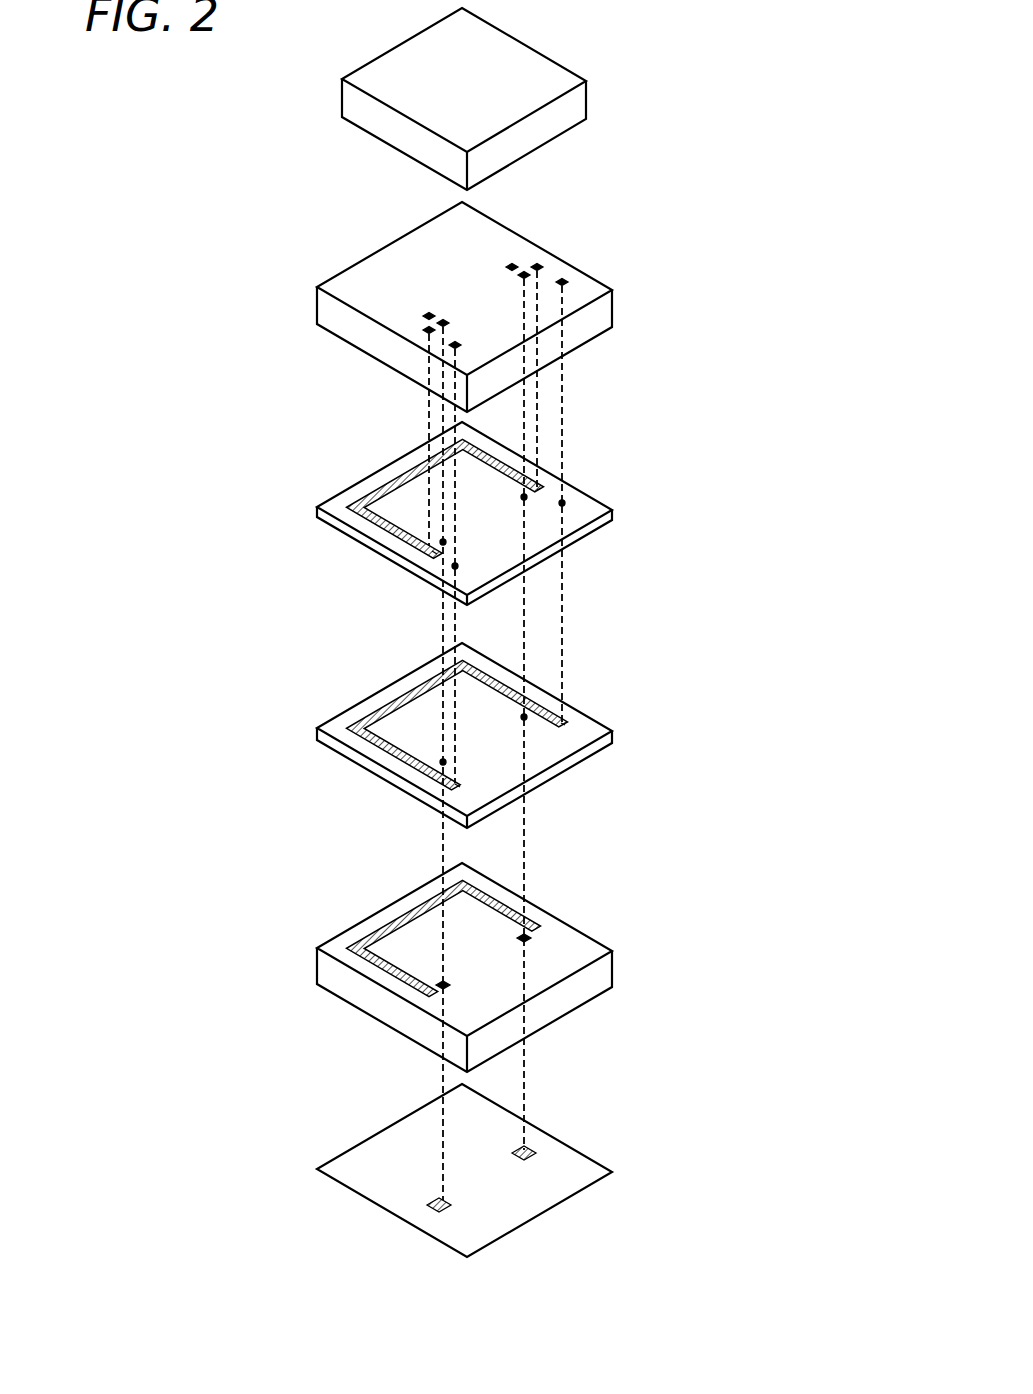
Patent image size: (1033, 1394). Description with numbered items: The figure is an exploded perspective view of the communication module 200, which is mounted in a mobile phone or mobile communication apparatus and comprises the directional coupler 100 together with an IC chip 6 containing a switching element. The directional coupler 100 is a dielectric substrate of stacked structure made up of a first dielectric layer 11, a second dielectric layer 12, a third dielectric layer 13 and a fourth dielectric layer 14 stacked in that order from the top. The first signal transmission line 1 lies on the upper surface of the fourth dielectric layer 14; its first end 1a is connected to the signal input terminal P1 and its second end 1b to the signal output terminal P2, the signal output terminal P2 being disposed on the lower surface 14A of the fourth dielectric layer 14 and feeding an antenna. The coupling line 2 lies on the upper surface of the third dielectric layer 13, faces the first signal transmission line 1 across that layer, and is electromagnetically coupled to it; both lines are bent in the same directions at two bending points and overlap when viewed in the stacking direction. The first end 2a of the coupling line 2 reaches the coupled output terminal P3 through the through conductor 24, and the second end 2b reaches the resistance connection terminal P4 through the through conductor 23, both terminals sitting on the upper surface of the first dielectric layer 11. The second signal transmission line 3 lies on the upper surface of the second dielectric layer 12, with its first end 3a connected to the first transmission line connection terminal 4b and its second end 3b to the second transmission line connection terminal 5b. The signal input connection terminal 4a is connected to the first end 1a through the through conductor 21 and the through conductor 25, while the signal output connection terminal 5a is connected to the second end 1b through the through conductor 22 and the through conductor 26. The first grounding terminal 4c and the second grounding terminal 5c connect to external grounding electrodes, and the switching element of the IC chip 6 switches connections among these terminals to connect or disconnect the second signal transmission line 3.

The communication module 200 is at (742, 119).
The directional coupler 100 is at (692, 379).
The IC chip 6 is at (535, 70).
The first dielectric layer 11 is at (608, 312).
The second dielectric layer 12 is at (607, 520).
The third dielectric layer 13 is at (607, 738).
The fourth dielectric layer 14 is at (607, 973).
The lower surface of the fourth dielectric layer 14A is at (590, 1170).
The first signal transmission line 1 is at (388, 922).
The first end of the first signal transmission line 1a is at (523, 938).
The second end of the first signal transmission line 1b is at (443, 986).
The coupling line 2 is at (392, 698).
The first end of the coupling line 2a is at (563, 725).
The second end of the coupling line 2b is at (458, 785).
The second signal transmission line 3 is at (390, 480).
The first end of the second signal transmission line 3a is at (540, 490).
The second end of the second signal transmission line 3b is at (434, 553).
The signal input connection terminal 4a is at (524, 271).
The first transmission line connection terminal 4b is at (538, 264).
The first grounding terminal 4c is at (512, 263).
The signal output connection terminal 5a is at (443, 319).
The second transmission line connection terminal 5b is at (427, 331).
The second grounding terminal 5c is at (428, 316).
The signal input terminal P1 is at (525, 1152).
The signal output terminal P2 is at (437, 1206).
The coupled output terminal P3 is at (563, 279).
The resistance connection terminal P4 is at (457, 343).
The through conductor 21 is at (524, 497).
The through conductor 22 is at (442, 542).
The through conductor 23 is at (455, 567).
The through conductor 24 is at (563, 503).
The through conductor 25 is at (524, 717).
The through conductor 26 is at (442, 762).